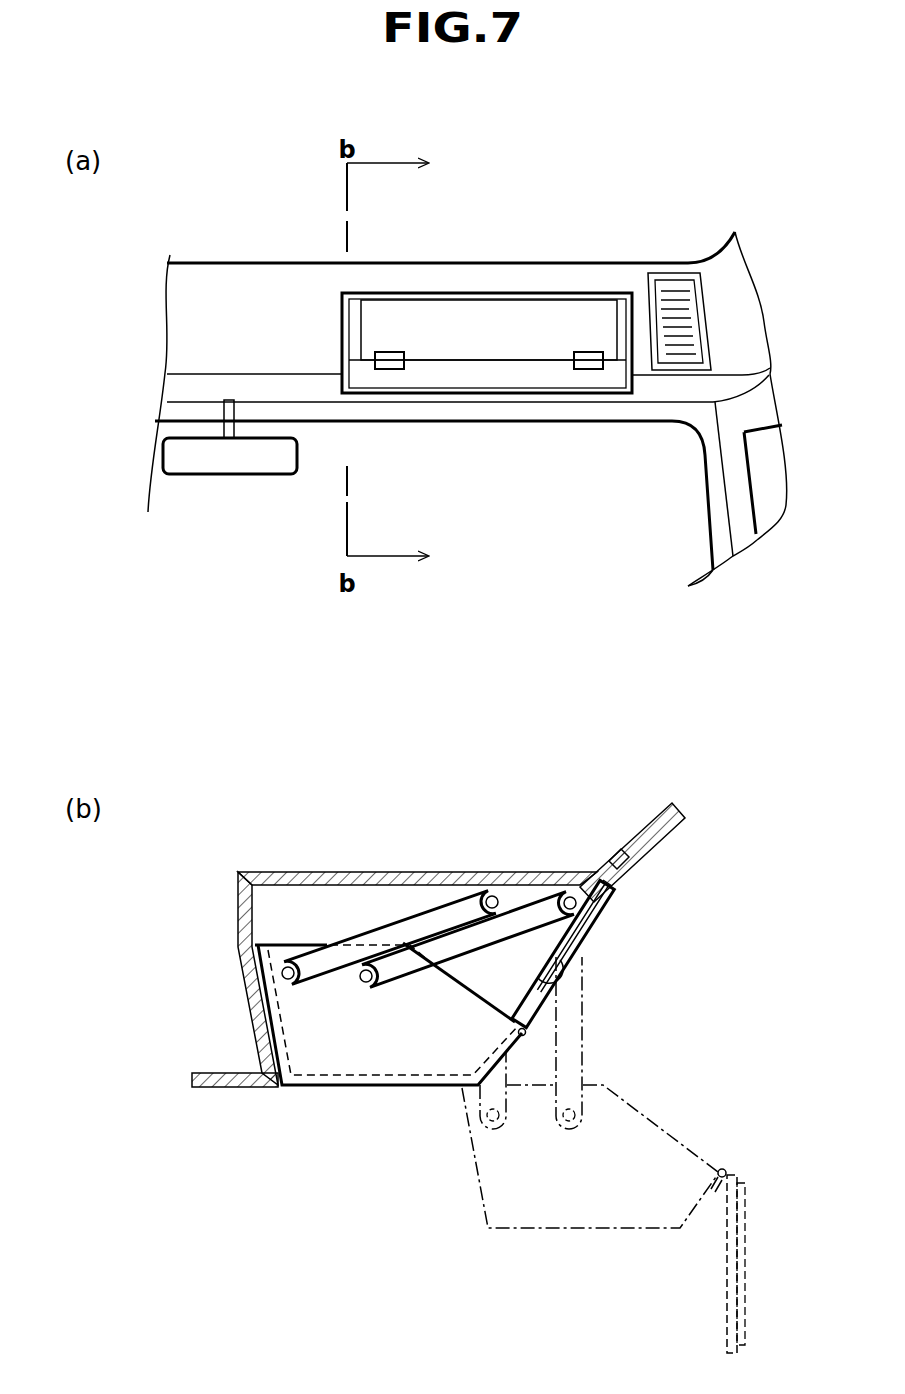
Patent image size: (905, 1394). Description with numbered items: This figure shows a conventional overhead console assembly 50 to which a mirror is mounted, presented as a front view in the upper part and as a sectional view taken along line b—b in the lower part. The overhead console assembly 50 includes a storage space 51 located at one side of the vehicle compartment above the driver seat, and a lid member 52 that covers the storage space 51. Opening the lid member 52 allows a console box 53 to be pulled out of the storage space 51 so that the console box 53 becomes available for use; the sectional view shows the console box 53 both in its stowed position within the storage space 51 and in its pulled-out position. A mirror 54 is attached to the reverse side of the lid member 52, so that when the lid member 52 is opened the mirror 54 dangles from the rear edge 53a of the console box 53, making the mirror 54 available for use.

The overhead console assembly 50 is at (546, 246).
The storage space 51 is at (470, 338).
The lid member 52 is at (586, 311).
The console box 53 is at (378, 1050).
The rear edge 53a is at (724, 1165).
The mirror 54 is at (548, 984).